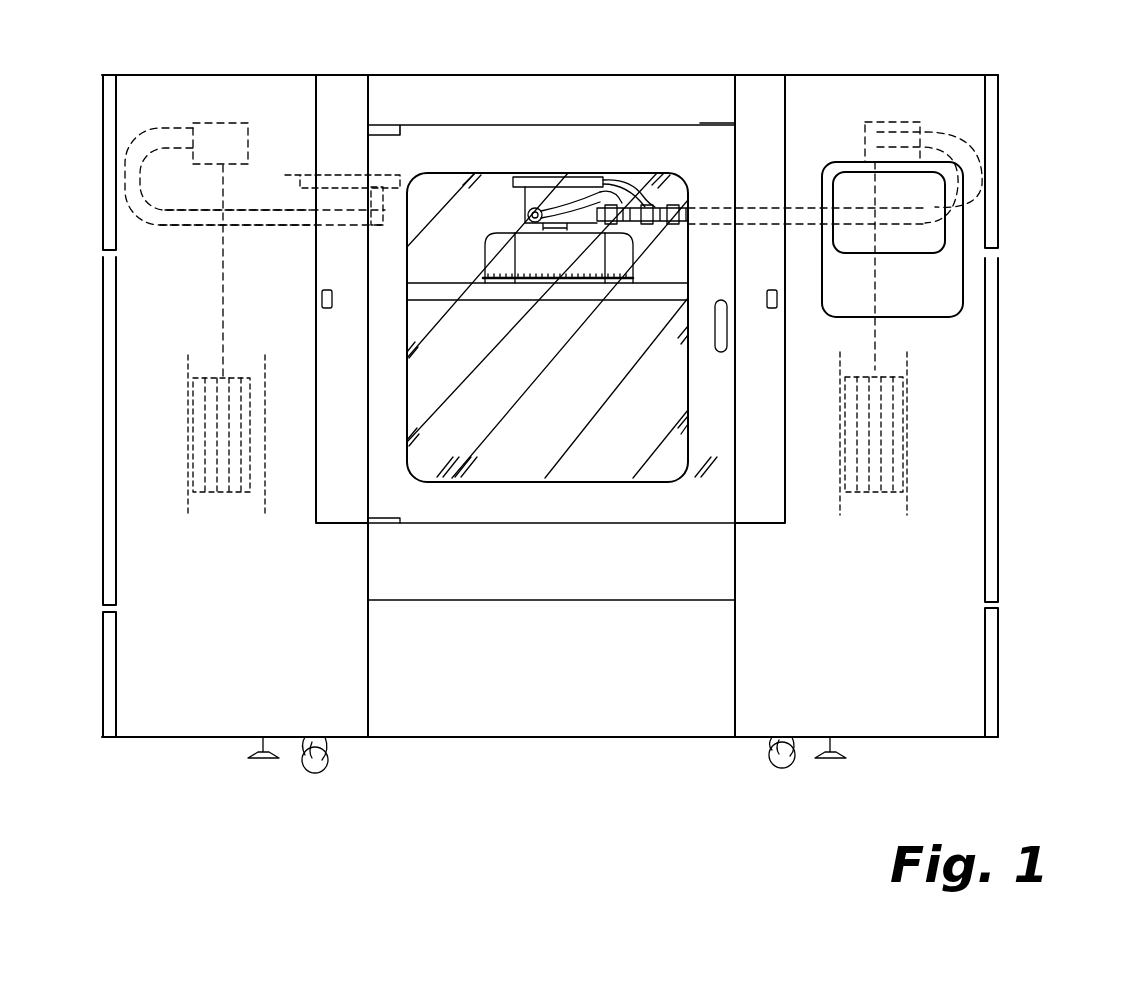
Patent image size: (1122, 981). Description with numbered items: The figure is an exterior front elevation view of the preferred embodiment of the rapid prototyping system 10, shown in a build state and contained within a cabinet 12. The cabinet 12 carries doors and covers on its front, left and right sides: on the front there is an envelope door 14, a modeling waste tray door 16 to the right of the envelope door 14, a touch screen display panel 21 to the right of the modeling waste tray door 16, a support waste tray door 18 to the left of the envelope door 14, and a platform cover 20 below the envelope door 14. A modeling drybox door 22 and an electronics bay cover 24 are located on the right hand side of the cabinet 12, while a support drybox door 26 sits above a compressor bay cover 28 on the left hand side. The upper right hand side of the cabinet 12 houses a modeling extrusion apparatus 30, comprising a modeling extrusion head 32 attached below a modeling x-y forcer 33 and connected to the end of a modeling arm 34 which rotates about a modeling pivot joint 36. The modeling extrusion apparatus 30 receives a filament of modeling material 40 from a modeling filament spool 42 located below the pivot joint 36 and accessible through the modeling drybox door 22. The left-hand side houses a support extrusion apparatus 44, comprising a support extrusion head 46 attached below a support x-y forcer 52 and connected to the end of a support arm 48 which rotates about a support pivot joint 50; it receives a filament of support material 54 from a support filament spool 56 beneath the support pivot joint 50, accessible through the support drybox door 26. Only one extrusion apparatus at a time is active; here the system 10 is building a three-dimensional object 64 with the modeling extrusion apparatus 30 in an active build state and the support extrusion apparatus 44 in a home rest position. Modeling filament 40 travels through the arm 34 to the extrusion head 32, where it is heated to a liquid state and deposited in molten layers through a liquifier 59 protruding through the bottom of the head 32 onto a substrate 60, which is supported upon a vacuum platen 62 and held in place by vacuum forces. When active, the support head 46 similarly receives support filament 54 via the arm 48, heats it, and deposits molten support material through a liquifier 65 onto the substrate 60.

The rapid prototyping system 10 is at (1048, 712).
The cabinet 12 is at (945, 66).
The envelope door 14 is at (692, 487).
The modeling waste tray door 16 is at (778, 82).
The support waste tray door 18 is at (335, 500).
The platform cover 20 is at (562, 702).
The touch screen display panel 21 is at (930, 266).
The modeling drybox door 22 is at (993, 573).
The electronics bay cover 24 is at (993, 640).
The support drybox door 26 is at (112, 310).
The compressor bay cover 28 is at (112, 668).
The modeling extrusion apparatus 30 is at (960, 130).
The modeling extrusion head 32 is at (578, 198).
The modeling x-y forcer 33 is at (556, 176).
The modeling arm 34 is at (670, 210).
The modeling pivot joint 36 is at (905, 122).
The filament of modeling material 40 is at (875, 332).
The modeling filament spool 42 is at (915, 405).
The support extrusion apparatus 44 is at (150, 125).
The support extrusion head 46 is at (376, 211).
The support arm 48 is at (263, 218).
The support pivot joint 50 is at (228, 145).
The support x-y forcer 52 is at (347, 176).
The filament of support material 54 is at (223, 243).
The support filament spool 56 is at (190, 515).
The liquifier 59 is at (560, 226).
The substrate 60 is at (450, 283).
The vacuum platen 62 is at (497, 285).
The three-dimensional object 64 is at (620, 255).
The liquifier 65 is at (338, 227).